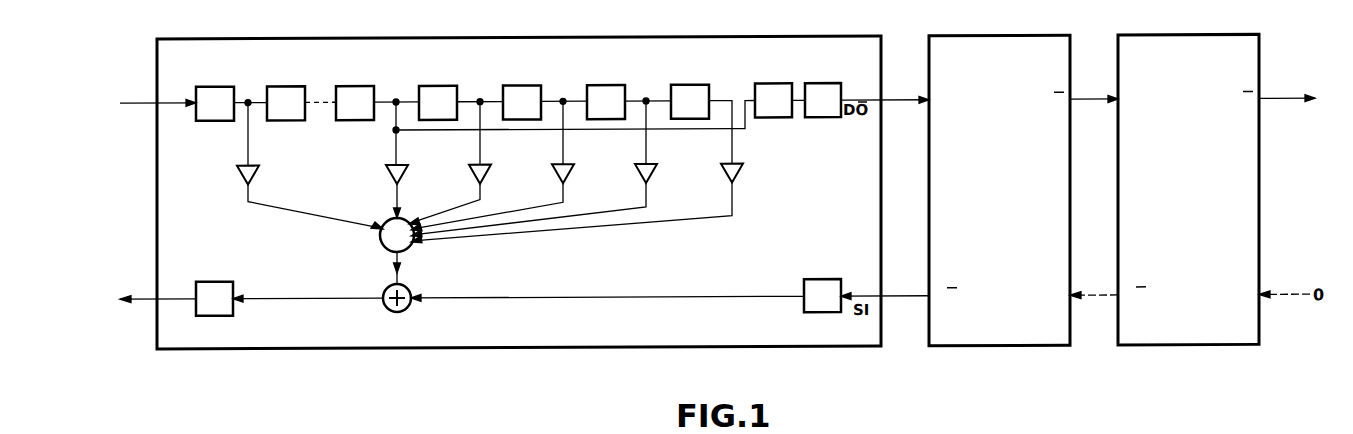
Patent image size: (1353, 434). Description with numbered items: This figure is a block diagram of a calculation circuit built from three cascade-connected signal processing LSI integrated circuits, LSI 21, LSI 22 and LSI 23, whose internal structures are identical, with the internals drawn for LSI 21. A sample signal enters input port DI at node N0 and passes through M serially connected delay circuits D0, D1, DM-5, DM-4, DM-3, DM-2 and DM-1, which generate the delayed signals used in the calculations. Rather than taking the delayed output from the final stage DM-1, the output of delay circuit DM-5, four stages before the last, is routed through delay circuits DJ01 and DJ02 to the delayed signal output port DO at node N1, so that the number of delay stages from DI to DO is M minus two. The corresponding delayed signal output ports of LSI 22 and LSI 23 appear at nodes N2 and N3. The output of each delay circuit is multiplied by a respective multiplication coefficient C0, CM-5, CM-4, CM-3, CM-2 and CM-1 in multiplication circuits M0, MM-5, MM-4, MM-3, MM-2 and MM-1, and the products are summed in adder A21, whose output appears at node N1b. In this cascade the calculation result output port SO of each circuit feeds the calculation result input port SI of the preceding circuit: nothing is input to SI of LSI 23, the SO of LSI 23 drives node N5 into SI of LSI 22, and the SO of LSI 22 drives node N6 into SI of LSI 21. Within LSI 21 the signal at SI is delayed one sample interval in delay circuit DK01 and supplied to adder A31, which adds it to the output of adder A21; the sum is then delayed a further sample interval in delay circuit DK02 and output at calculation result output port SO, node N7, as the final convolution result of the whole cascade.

The signal processing LSI integrated circuit 21 is at (480, 349).
The signal processing LSI integrated circuit 22 is at (989, 349).
The signal processing LSI integrated circuit 23 is at (1180, 349).
The delay circuit D0 is at (215, 87).
The delay circuit D1 is at (285, 87).
The delay circuit DM-5 is at (355, 87).
The delay circuit DM-4 is at (438, 87).
The delay circuit DM-3 is at (521, 87).
The delay circuit DM-2 is at (605, 87).
The delay circuit DM-1 is at (689, 87).
The delay circuit DJ01 is at (770, 86).
The delay circuit DJ02 is at (833, 86).
The delay circuit DK01 is at (822, 282).
The delay circuit DK02 is at (214, 282).
The multiplication coefficient C0 is at (310, 167).
The multiplication coefficient CM-5 is at (420, 161).
The multiplication coefficient CM-4 is at (474, 164).
The multiplication coefficient CM-3 is at (516, 167).
The multiplication coefficient CM-2 is at (558, 170).
The multiplication coefficient CM-1 is at (601, 185).
The multiplication circuit M0 is at (237, 173).
The multiplication circuit MM-5 is at (386, 173).
The multiplication circuit MM-4 is at (471, 166).
The multiplication circuit MM-3 is at (554, 166).
The multiplication circuit MM-2 is at (637, 166).
The multiplication circuit MM-1 is at (718, 166).
The adder A21 is at (384, 250).
The adder A31 is at (400, 313).
The node N0 is at (158, 102).
The node N1 is at (885, 91).
The node N1b is at (416, 268).
The node N2 is at (1094, 90).
The node N3 is at (1302, 93).
The node N5 is at (1094, 286).
The node N6 is at (885, 287).
The node N7 is at (158, 299).